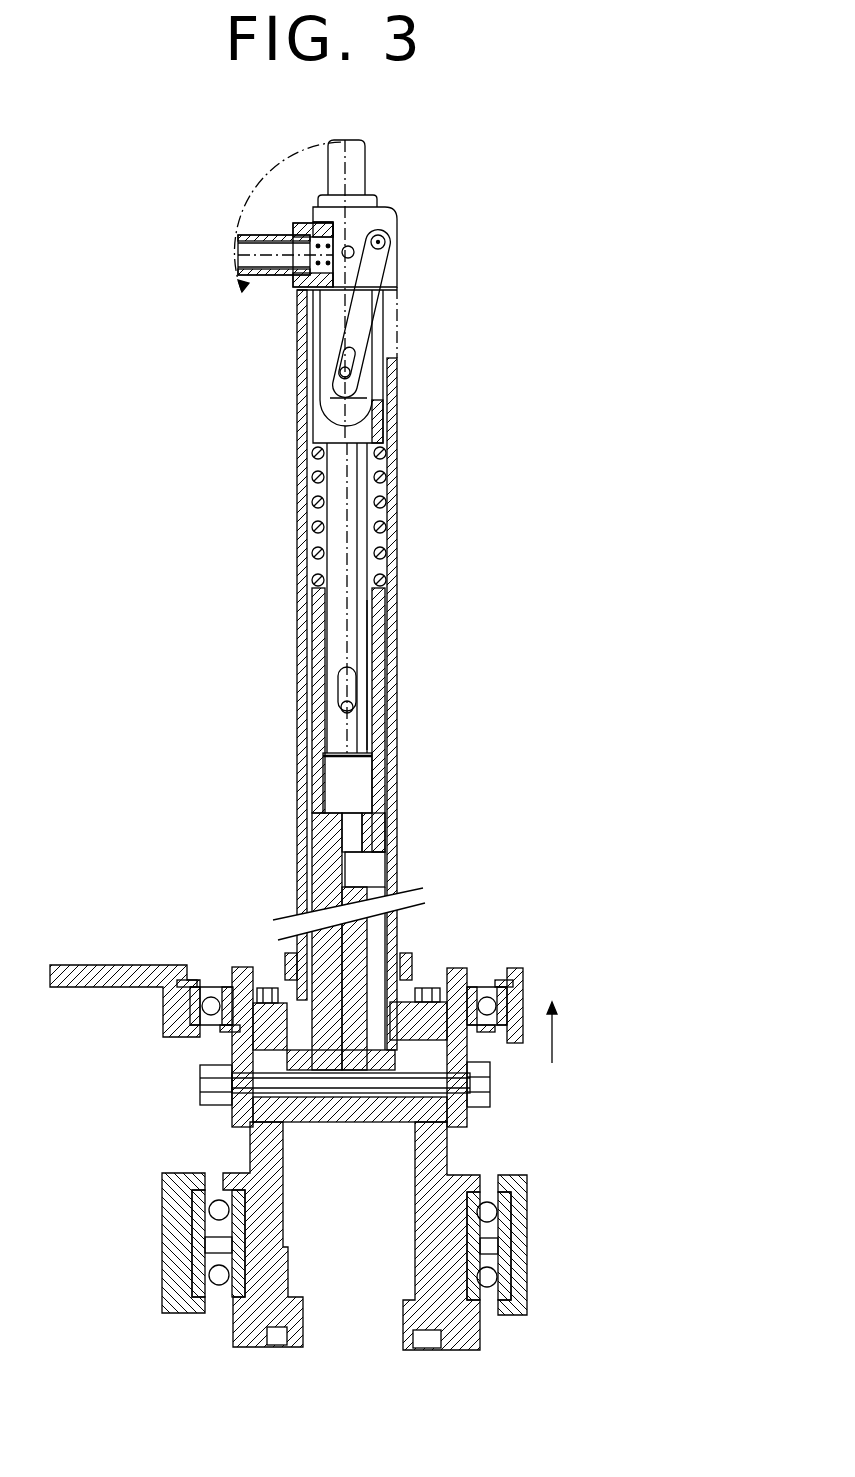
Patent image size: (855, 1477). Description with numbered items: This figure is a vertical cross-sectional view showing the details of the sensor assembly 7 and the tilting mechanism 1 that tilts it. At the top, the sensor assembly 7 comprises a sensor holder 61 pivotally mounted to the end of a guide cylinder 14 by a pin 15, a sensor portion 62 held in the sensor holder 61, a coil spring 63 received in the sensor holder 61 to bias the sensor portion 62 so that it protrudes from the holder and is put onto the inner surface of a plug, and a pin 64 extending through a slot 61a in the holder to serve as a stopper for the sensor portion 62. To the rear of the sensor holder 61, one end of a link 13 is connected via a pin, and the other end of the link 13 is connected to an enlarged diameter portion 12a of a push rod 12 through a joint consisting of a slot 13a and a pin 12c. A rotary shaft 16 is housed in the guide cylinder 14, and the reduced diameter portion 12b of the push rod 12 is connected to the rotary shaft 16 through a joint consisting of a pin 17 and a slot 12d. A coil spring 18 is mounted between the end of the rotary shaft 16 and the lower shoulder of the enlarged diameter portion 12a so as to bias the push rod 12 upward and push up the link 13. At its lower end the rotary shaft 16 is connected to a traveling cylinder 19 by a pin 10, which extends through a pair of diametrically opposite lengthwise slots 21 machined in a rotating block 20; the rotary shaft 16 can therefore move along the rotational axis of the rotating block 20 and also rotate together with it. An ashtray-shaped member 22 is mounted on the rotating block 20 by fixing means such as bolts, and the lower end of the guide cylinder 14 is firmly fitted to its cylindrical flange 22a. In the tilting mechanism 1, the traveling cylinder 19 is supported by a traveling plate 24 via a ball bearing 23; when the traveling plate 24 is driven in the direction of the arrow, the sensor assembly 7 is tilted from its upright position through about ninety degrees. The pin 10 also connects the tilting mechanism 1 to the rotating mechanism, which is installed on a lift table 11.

The tilting mechanism 1 is at (492, 950).
The sensor assembly 7 is at (405, 253).
The pin 10 is at (490, 1098).
The lift table 11 is at (525, 1205).
The push rod 12 is at (332, 510).
The enlarged diameter portion 12a is at (373, 430).
The reduced diameter portion 12b is at (368, 682).
The pin 12c is at (355, 360).
The slot 12d is at (340, 680).
The link 13 is at (368, 303).
The slot 13a is at (338, 377).
The guide cylinder 14 is at (398, 467).
The pin 15 is at (345, 258).
The rotary shaft 16 is at (320, 830).
The pin 17 is at (350, 707).
The coil spring 18 is at (381, 523).
The traveling cylinder 19 is at (240, 966).
The rotating block 20 is at (250, 1152).
The lengthwise slots 21 is at (444, 1138).
The ashtray-shaped member 22 is at (420, 1050).
The cylindrical flange 22a is at (413, 963).
The ball bearing 23 is at (199, 980).
The traveling plate 24 is at (523, 972).
The sensor holder 61 is at (295, 286).
The slot 61a is at (387, 236).
The sensor portion 62 is at (243, 250).
The coil spring 63 is at (310, 223).
The pin 64 is at (316, 247).